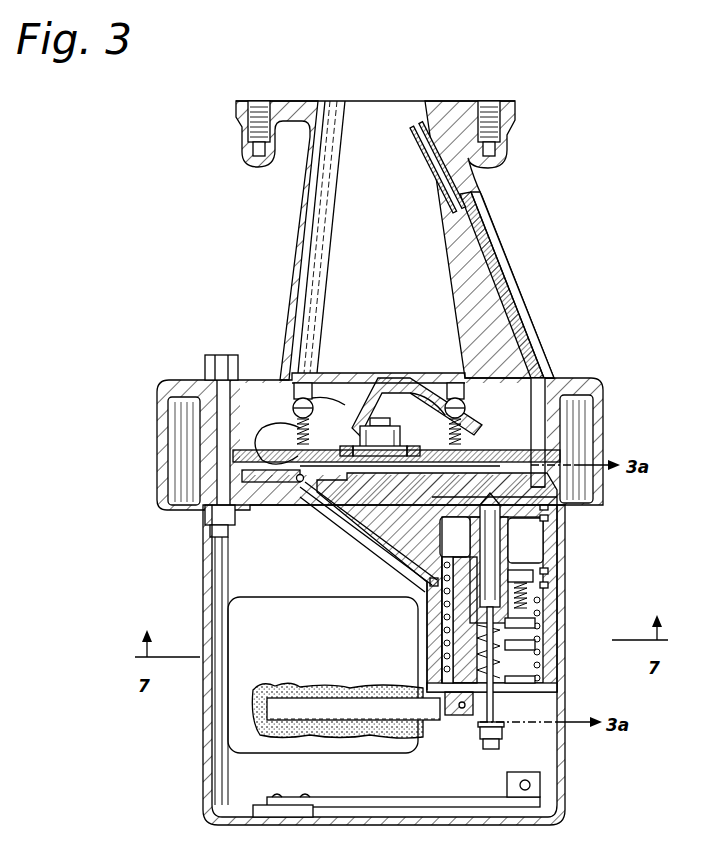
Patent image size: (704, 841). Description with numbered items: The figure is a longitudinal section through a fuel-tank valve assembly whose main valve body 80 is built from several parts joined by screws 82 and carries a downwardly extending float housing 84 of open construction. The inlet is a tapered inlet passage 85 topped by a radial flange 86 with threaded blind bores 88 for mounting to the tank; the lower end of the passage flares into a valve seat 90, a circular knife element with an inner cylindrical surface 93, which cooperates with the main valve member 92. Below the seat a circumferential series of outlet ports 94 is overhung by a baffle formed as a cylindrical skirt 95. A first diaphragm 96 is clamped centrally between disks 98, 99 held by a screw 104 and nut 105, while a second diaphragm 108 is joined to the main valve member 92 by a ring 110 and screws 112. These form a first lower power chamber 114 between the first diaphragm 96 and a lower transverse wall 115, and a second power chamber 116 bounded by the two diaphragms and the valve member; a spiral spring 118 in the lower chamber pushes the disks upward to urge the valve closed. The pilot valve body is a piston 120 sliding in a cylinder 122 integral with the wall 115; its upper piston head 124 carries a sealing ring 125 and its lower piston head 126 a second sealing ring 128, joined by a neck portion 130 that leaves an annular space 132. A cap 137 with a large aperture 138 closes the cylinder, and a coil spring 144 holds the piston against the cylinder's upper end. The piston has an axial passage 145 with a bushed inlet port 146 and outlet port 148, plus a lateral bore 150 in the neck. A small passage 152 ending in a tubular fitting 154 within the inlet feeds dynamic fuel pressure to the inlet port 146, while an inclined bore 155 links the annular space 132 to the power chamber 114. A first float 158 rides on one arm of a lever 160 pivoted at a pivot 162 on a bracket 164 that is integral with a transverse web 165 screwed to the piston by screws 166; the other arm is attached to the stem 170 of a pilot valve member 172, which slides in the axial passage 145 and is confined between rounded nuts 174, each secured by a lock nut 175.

The main valve body 80 is at (600, 382).
The screws 82 is at (215, 356).
The float housing 84 is at (205, 543).
The tapered inlet passage 85 is at (338, 246).
The radial flange 86 is at (283, 109).
The threaded blind bores 88 is at (262, 101).
The valve seat 90 is at (540, 366).
The main valve member 92 is at (389, 428).
The inner cylindrical surface 93 is at (470, 396).
The outlet ports 94 is at (306, 398).
The cylindrical skirt 95 is at (605, 430).
The first diaphragm 96 is at (233, 511).
The disk 98 is at (357, 449).
The disk 99 is at (302, 490).
The screw 104 is at (379, 386).
The nut 105 is at (440, 403).
The second diaphragm 108 is at (280, 426).
The ring 110 is at (356, 401).
The screws 112 is at (301, 382).
The first lower power chamber 114 is at (315, 512).
The lower transverse wall 115 is at (291, 483).
The second power chamber 116 is at (245, 464).
The spiral spring 118 is at (416, 445).
The piston 120 is at (427, 600).
The cylinder 122 is at (427, 642).
The upper piston head 124 is at (548, 522).
The sealing ring 125 is at (545, 510).
The lower piston head 126 is at (548, 575).
The second sealing ring 128 is at (548, 587).
The neck portion 130 is at (525, 540).
The annular space 132 is at (432, 582).
The cap 137 is at (545, 705).
The aperture 138 is at (445, 695).
The coil spring 144 is at (540, 669).
The axial passage 145 is at (505, 558).
The inlet port 146 is at (540, 502).
The outlet port 148 is at (452, 612).
The lateral bore 150 is at (458, 556).
The passage 152 is at (514, 293).
The tubular fitting 154 is at (432, 170).
The inclined bore 155 is at (412, 562).
The first float 158 is at (300, 754).
The lever 160 is at (437, 738).
The pivot 162 is at (475, 751).
The bracket 164 is at (462, 674).
The transverse web 165 is at (540, 644).
The screws 166 is at (540, 654).
The stem 170 is at (498, 692).
The pilot valve member 172 is at (540, 598).
The rounded nuts 174 is at (504, 734).
The lock nut 175 is at (480, 744).